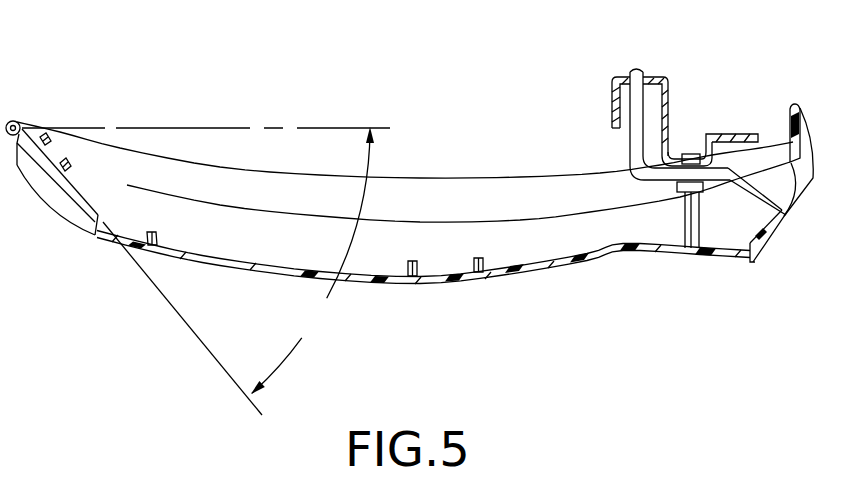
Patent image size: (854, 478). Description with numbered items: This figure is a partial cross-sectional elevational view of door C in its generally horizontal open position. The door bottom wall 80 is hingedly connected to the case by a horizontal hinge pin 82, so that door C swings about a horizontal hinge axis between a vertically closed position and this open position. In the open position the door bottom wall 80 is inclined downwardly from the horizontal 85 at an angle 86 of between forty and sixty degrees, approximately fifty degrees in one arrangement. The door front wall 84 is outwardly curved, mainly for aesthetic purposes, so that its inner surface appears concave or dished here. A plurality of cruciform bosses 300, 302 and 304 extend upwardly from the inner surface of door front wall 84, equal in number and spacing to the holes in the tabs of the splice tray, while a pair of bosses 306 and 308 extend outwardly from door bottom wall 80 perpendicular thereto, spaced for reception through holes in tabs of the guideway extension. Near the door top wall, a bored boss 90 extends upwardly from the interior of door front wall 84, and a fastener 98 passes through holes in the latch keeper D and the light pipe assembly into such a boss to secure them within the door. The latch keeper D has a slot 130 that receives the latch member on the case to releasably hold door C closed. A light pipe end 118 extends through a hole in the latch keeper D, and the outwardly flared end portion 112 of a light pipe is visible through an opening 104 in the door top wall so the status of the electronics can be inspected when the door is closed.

The horizontal hinge pin 82 is at (14, 121).
The boss 306 is at (56, 136).
The door bottom wall 80 is at (77, 190).
The boss 308 is at (88, 181).
The door front wall 84 is at (312, 277).
The horizontal 85 is at (277, 127).
The angle 86 is at (312, 260).
The cruciform boss 300 is at (157, 250).
The cruciform boss 302 is at (417, 280).
The cruciform boss 304 is at (483, 266).
The light pipe end 118 is at (641, 72).
The fastener 98 is at (688, 154).
The slot 130 is at (737, 134).
The bored boss 90 is at (690, 240).
The outwardly flared end portion of light pipe 112 is at (757, 190).
The opening 104 is at (784, 216).
The latch keeper D is at (602, 94).
The door C is at (809, 106).